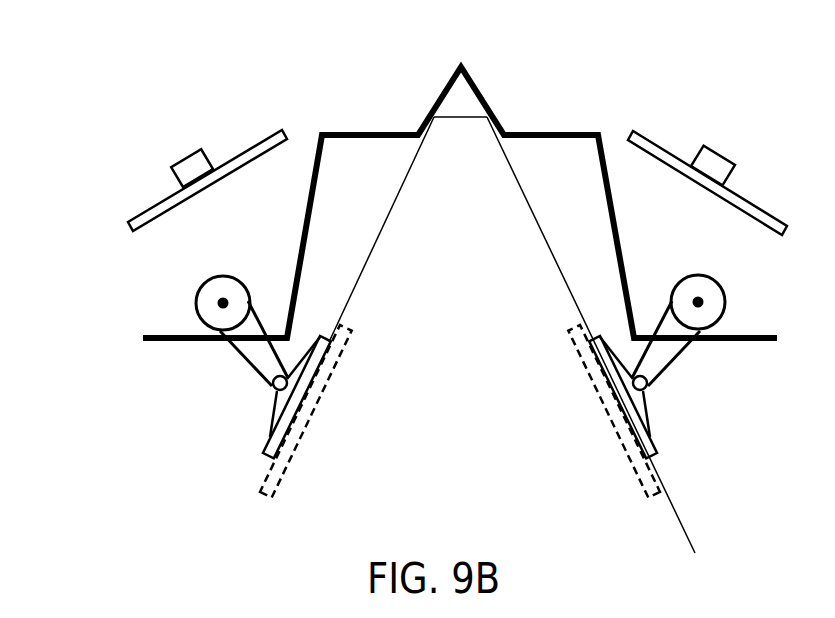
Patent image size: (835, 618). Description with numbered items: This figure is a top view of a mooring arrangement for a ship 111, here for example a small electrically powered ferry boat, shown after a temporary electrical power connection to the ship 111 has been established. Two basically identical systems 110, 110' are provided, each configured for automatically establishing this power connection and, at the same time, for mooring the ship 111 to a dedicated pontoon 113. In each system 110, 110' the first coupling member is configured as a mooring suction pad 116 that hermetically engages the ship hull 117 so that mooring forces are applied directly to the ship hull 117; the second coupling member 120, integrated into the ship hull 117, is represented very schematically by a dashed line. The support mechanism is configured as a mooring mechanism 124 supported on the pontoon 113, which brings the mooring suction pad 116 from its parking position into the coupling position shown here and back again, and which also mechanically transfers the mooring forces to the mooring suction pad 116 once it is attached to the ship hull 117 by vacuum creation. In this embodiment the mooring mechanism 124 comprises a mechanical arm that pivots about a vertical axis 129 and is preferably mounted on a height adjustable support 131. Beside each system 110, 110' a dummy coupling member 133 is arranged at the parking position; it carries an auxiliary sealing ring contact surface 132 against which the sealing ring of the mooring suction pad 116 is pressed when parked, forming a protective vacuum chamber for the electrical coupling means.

The mooring system 110 is at (173, 157).
The second mooring system 110' is at (707, 126).
The ship 111 is at (475, 429).
The pontoon 113 is at (587, 83).
The mooring suction pad 116 is at (261, 432).
The ship hull 117 is at (362, 268).
The reflector alternate position 120 is at (325, 387).
The mooring mechanism 124 is at (257, 352).
The vertical axis 129 is at (226, 301).
The height adjustable support 131 is at (208, 318).
The auxiliary sealing ring contact surface 132 is at (173, 218).
The dummy coupling member 133 is at (135, 190).